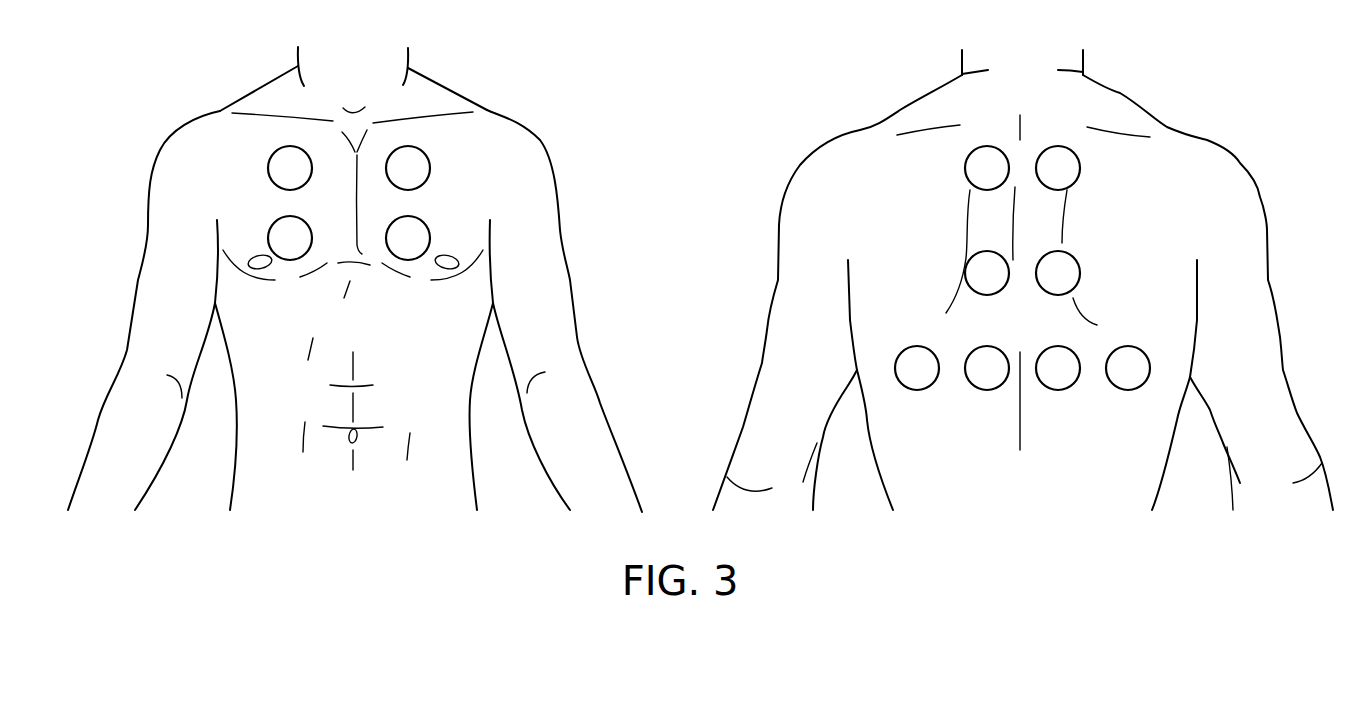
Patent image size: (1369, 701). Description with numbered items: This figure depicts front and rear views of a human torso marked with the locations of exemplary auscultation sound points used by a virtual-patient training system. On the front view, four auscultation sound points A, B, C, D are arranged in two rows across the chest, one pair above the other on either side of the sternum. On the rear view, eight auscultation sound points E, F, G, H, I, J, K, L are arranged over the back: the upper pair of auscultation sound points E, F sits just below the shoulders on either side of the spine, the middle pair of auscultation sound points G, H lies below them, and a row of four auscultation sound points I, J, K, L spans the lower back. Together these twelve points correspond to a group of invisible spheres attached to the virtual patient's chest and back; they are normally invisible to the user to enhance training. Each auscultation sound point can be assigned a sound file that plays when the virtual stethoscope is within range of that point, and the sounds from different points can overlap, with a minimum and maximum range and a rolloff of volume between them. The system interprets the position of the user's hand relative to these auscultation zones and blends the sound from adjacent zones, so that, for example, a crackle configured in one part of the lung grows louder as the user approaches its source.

The auscultation sound point A is at (290, 168).
The auscultation sound point B is at (408, 168).
The auscultation sound point C is at (290, 238).
The auscultation sound point D is at (408, 238).
The auscultation sound point E is at (987, 168).
The auscultation sound point F is at (1058, 168).
The auscultation sound point G is at (987, 273).
The auscultation sound point H is at (1058, 273).
The auscultation sound point I is at (917, 368).
The auscultation sound point J is at (987, 368).
The auscultation sound point K is at (1058, 368).
The auscultation sound point L is at (1128, 368).